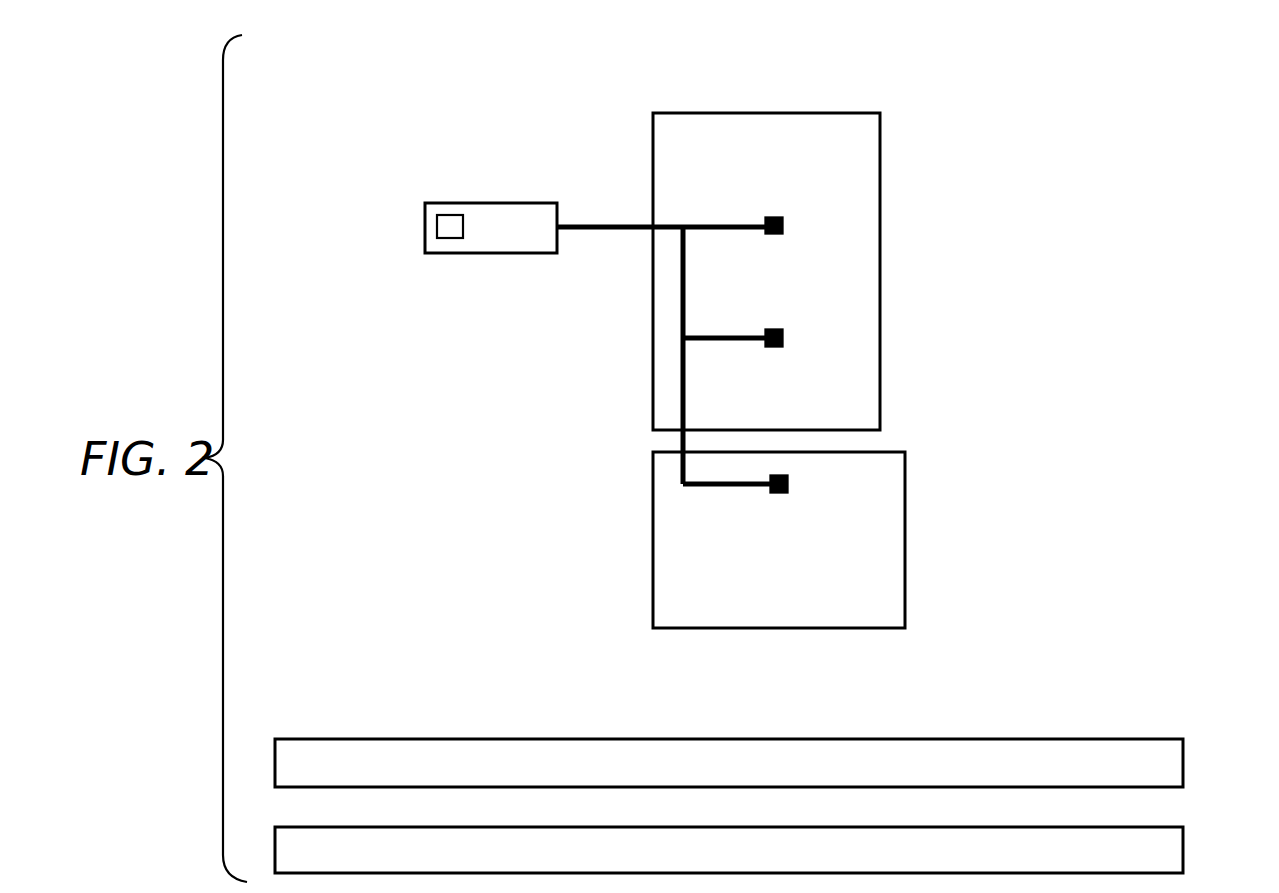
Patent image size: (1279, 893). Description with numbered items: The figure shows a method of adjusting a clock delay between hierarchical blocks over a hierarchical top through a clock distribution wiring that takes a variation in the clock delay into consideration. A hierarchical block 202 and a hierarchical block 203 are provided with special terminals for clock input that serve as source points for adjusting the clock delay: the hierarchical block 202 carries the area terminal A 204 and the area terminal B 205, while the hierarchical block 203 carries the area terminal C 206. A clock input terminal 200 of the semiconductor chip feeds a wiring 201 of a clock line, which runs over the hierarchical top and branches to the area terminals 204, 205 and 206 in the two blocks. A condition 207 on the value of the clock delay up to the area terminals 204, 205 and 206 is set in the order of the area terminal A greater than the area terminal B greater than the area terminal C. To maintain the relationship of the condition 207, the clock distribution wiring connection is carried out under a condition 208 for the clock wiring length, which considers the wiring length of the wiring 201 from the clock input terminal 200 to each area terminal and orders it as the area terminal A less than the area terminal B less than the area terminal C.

The clock input terminal 200 is at (430, 203).
The wiring of a clock line 201 is at (572, 218).
The hierarchical block 202 is at (665, 112).
The hierarchical block 203 is at (660, 630).
The area terminal A 204 is at (777, 235).
The area terminal B 205 is at (777, 348).
The area terminal C 206 is at (781, 494).
The condition of the value of a clock delay 207 is at (1183, 763).
The condition for clock wiring length 208 is at (1183, 849).